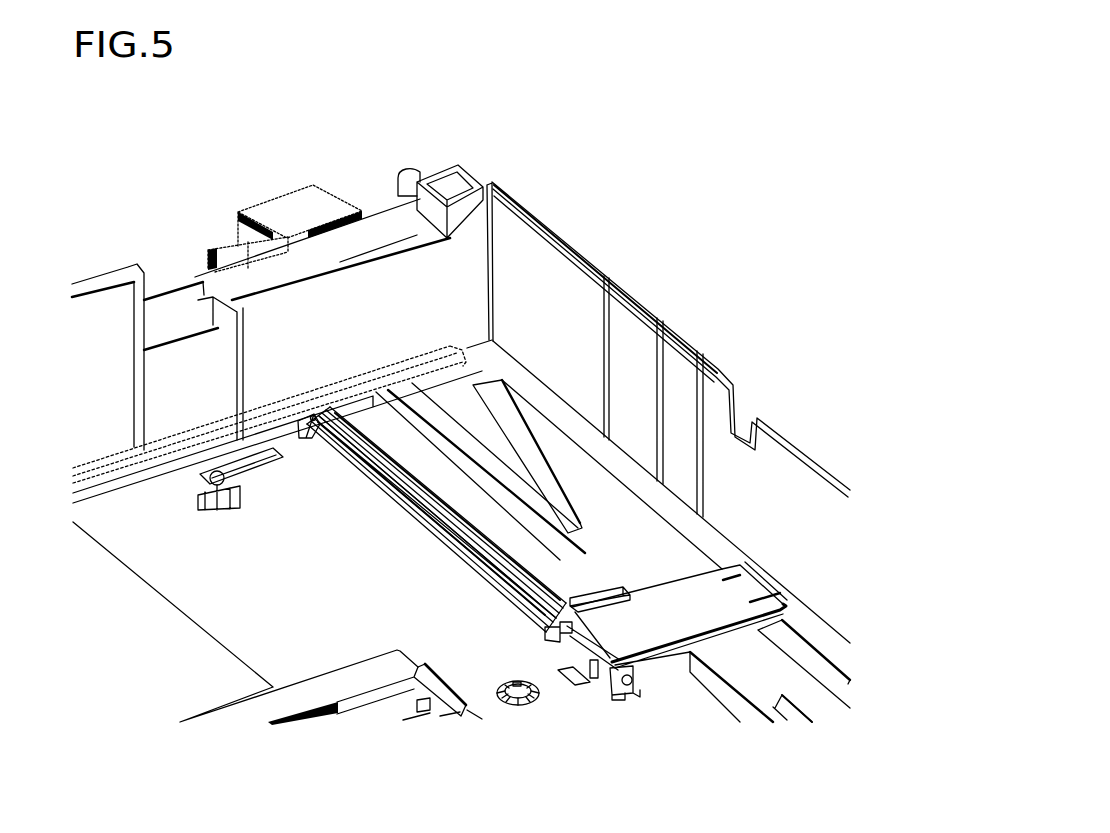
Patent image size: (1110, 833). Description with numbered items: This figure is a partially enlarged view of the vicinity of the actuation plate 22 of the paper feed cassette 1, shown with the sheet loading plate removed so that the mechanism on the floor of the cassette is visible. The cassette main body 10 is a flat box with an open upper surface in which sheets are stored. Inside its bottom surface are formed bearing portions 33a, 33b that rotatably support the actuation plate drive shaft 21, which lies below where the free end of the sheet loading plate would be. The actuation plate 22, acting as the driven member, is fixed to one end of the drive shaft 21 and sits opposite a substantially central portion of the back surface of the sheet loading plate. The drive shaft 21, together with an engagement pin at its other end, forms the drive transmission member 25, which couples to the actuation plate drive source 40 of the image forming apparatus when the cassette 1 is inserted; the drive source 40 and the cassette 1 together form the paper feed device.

The paper feed cassette 1 is at (661, 232).
The cassette main body 10 is at (716, 373).
The actuation plate drive source 40 is at (263, 212).
The actuation plate drive shaft 21 is at (420, 516).
The drive transmission member 25 is at (437, 517).
The actuation plate 22 is at (677, 604).
The bearing portion 33a is at (305, 430).
The bearing portion 33b is at (638, 683).